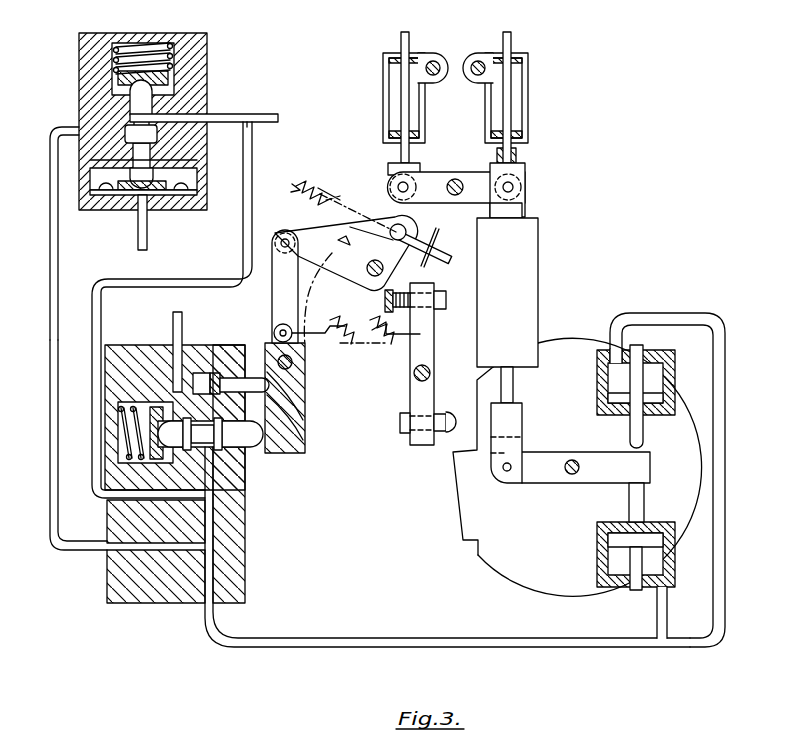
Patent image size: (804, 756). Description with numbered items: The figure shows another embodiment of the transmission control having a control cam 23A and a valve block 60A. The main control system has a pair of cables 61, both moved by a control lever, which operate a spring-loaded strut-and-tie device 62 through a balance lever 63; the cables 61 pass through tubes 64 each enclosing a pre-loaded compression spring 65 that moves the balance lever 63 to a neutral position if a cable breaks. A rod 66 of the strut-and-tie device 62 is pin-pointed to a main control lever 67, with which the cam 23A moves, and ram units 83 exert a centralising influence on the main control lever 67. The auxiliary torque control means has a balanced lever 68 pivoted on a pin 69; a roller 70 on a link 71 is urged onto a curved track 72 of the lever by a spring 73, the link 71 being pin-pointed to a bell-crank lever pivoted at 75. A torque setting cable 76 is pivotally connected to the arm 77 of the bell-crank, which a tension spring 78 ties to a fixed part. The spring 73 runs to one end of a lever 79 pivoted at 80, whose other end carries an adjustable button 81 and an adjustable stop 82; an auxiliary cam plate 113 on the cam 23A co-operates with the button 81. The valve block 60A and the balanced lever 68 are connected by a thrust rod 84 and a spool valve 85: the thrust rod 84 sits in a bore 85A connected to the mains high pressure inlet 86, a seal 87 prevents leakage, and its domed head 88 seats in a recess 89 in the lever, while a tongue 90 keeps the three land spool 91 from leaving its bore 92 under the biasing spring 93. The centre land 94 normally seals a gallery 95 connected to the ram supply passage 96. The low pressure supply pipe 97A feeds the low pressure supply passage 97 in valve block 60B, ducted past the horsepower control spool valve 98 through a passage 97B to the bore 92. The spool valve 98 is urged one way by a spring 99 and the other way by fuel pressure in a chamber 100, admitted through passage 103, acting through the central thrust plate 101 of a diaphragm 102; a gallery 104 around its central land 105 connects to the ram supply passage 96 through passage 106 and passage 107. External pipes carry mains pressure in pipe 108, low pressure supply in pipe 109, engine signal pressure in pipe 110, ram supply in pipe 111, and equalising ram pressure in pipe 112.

The valve block 60B is at (200, 50).
The spring 99 is at (168, 74).
The horsepower control spool valve 98 is at (147, 103).
The low pressure supply passage 97 is at (192, 115).
The low pressure supply pipe 97A is at (261, 111).
The passage 106 is at (82, 126).
The gallery 104 is at (160, 132).
The central thrust plate 101 is at (192, 152).
The diaphragm 102 is at (192, 175).
The chamber 100 is at (192, 193).
The pipe 109 is at (243, 213).
The central land 105 is at (137, 192).
The pipe 110 is at (140, 220).
The passage 103 is at (140, 214).
The cables 61 is at (405, 42).
The compression spring 65 is at (480, 84).
The tubes 64 is at (485, 110).
The balance lever 63 is at (442, 170).
The arm 77 is at (404, 232).
The spring-loaded strut-and-tie device 62 is at (477, 232).
The tension spring 78 is at (338, 199).
The cable 76 is at (412, 250).
The pivot 75 is at (370, 277).
The curved track 72 is at (312, 275).
The link 71 is at (278, 286).
The roller 70 is at (280, 328).
The spring 73 is at (338, 340).
The adjustable stop 82 is at (440, 306).
The lever 79 is at (422, 342).
The pivot 80 is at (428, 371).
The adjustable button 81 is at (440, 416).
The mains high pressure inlet 86 is at (168, 356).
The pipe 108 is at (176, 332).
The bore 85A is at (201, 372).
The seal 87 is at (214, 372).
The spool valve 85 is at (241, 374).
The thrust rod 84 is at (249, 385).
The balanced lever 68 is at (305, 368).
The pin 69 is at (303, 385).
The recess 89 is at (303, 405).
The domed head 88 is at (303, 425).
The tongue 90 is at (303, 446).
The biasing spring 93 is at (120, 420).
The bore 92 is at (252, 454).
The three land spool 91 is at (224, 446).
The gallery 95 is at (237, 494).
The centre land 94 is at (246, 521).
The ram supply passage 96 is at (213, 538).
The valve block 60A is at (232, 572).
The passage 97B is at (120, 494).
The passage 107 is at (120, 549).
The rod 66 is at (507, 392).
The ram units 83 is at (597, 384).
The main control lever 67 is at (550, 457).
The auxiliary cam plate 113 is at (463, 486).
The control cam 23A is at (503, 556).
The pipe 112 is at (716, 561).
The pipe 111 is at (427, 648).